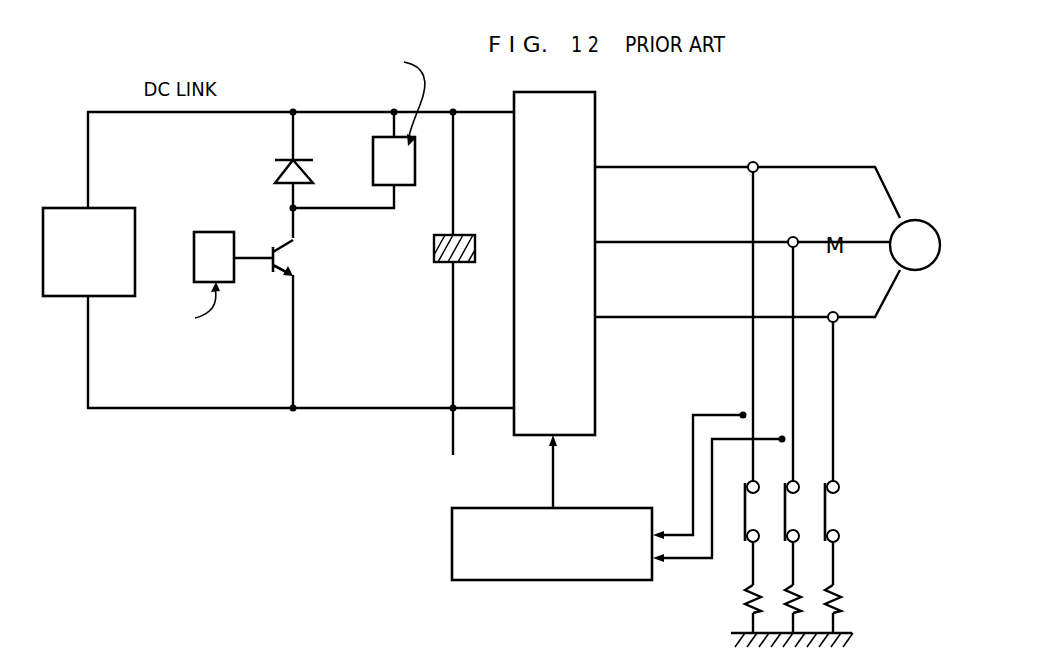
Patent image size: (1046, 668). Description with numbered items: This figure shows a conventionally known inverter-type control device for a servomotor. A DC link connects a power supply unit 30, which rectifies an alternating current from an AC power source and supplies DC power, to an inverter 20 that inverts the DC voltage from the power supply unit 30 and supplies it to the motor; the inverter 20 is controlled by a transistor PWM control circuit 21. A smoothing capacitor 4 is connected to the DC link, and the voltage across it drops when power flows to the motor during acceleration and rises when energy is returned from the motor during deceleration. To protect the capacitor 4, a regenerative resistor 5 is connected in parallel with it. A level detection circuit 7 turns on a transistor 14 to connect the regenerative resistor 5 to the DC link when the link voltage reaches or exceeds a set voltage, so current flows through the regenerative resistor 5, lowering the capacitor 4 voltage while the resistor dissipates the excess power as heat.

The power supply unit 30 is at (80, 208).
The level detection circuit 7 is at (194, 258).
The transistor 14 is at (268, 250).
The regenerative resistor 5 is at (373, 162).
The smoothing capacitor 4 is at (437, 262).
The inverter 20 is at (596, 116).
The transistor PWM control circuit 21 is at (452, 532).